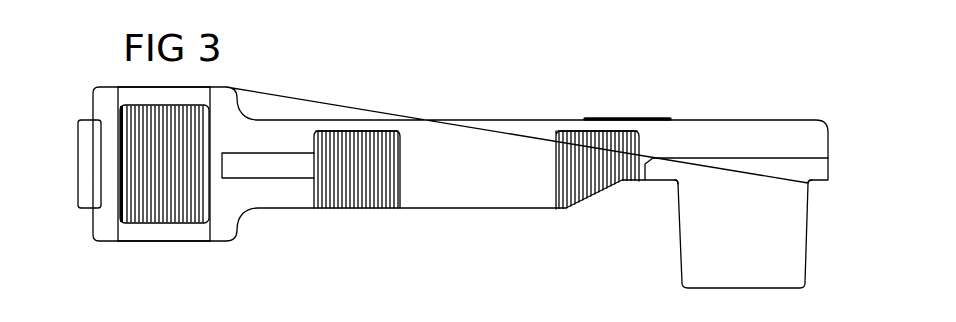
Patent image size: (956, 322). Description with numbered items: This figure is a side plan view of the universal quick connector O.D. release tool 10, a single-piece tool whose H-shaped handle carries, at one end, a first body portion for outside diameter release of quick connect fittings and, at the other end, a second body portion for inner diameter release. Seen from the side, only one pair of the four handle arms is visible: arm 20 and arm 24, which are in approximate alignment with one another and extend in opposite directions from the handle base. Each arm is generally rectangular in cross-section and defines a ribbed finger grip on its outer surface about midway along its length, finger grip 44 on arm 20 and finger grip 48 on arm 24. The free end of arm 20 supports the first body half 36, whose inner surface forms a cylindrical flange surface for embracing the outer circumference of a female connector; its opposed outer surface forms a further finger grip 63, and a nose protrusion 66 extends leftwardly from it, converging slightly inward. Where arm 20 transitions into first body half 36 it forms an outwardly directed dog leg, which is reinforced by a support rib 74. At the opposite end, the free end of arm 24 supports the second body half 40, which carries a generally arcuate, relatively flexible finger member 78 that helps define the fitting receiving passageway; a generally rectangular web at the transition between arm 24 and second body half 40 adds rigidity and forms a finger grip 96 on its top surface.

The universal quick connector O.D. release tool 10 is at (477, 234).
The arm 20 is at (350, 127).
The arm 24 is at (572, 126).
The first body half 36 is at (187, 96).
The second body half 40 is at (747, 138).
The finger grip 44 is at (349, 190).
The finger grip 48 is at (590, 176).
The finger grip 63 is at (168, 222).
The nose protrusion 66 is at (88, 163).
The support rib 74 is at (262, 168).
The finger member 78 is at (775, 257).
The finger grip 96 is at (610, 118).